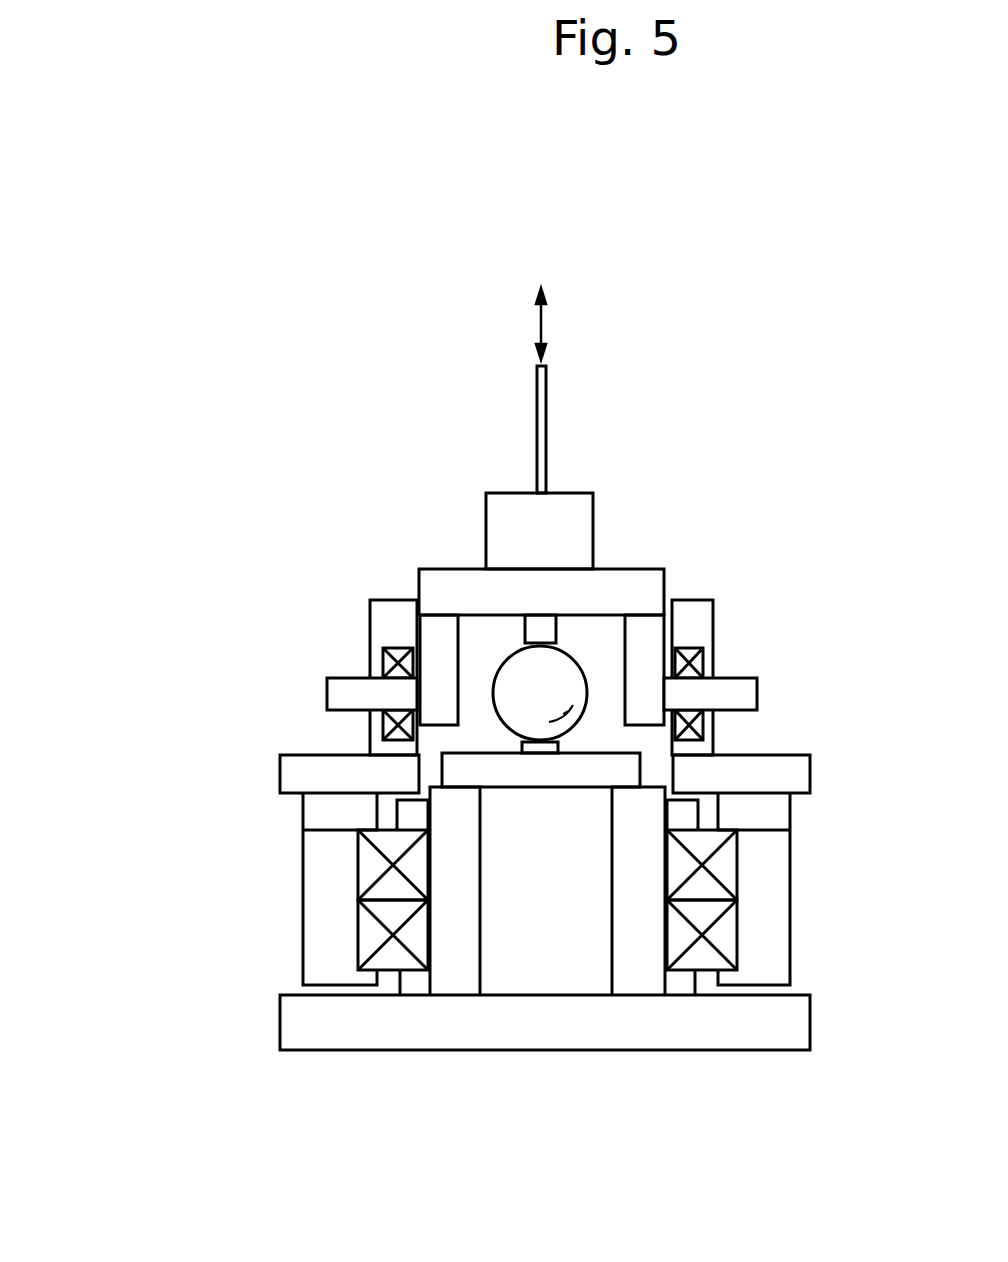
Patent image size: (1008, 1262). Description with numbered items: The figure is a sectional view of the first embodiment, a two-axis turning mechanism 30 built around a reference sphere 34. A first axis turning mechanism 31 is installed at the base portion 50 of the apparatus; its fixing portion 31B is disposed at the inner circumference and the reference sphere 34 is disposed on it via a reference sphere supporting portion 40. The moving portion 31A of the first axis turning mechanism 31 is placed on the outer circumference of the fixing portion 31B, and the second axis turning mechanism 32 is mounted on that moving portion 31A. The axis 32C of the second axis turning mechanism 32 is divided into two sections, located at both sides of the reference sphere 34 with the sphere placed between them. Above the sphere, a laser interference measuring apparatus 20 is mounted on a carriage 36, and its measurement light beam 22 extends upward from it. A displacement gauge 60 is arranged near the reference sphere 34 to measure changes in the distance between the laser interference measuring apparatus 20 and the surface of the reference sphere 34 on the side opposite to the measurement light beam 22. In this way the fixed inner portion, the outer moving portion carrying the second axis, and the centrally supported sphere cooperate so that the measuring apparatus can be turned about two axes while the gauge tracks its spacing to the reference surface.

The laser interference measuring apparatus 20 is at (583, 527).
The measurement light beam 22 is at (546, 432).
The two-axis turning mechanism 30 is at (235, 735).
The first axis turning mechanism 31 is at (300, 928).
The moving portion of the first axis turning mechanism 31A is at (303, 865).
The fixing portion of the first axis turning mechanism 31B is at (473, 923).
The second axis turning mechanism 32 is at (718, 662).
The axis of the second axis turning mechanism 32C is at (327, 697).
The reference sphere 34 is at (517, 663).
The carriage 36 is at (650, 583).
The reference sphere supporting portion 40 is at (548, 744).
The base portion 50 is at (442, 1052).
The displacement gauge 60 is at (556, 631).